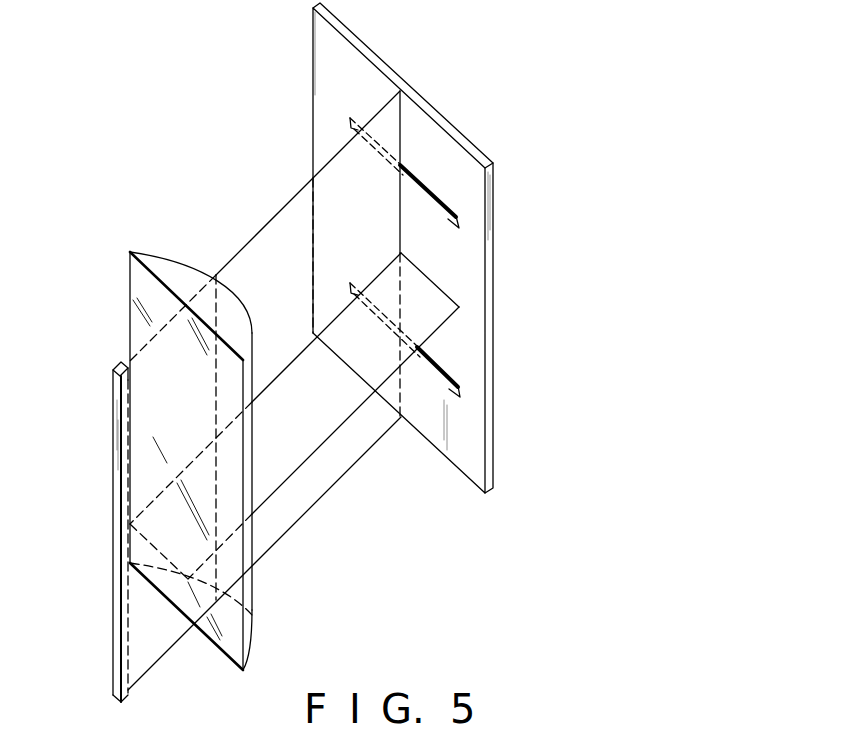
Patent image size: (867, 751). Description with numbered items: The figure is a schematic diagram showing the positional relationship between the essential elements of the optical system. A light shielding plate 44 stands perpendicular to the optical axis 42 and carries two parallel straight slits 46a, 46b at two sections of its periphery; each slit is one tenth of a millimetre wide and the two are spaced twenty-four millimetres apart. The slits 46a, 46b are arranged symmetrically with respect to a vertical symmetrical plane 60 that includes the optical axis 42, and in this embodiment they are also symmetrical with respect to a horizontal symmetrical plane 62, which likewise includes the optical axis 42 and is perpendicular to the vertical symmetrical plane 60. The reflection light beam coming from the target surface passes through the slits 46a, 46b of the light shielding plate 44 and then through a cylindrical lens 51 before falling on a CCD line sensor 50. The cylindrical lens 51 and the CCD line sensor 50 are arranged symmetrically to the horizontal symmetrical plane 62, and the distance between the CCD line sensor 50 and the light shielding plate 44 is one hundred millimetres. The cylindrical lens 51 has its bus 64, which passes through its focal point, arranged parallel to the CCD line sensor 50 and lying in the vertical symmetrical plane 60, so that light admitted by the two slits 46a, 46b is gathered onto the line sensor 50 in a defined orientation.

The optical axis 42 is at (281, 368).
The light shielding plate 44 is at (470, 283).
The slit 46a is at (460, 213).
The slit 46b is at (461, 387).
The CCD line sensor 50 is at (113, 453).
The cylindrical lens 51 is at (148, 258).
The vertical symmetrical plane 60 is at (274, 216).
The horizontal symmetrical plane 62 is at (333, 418).
The bus 64 is at (223, 299).